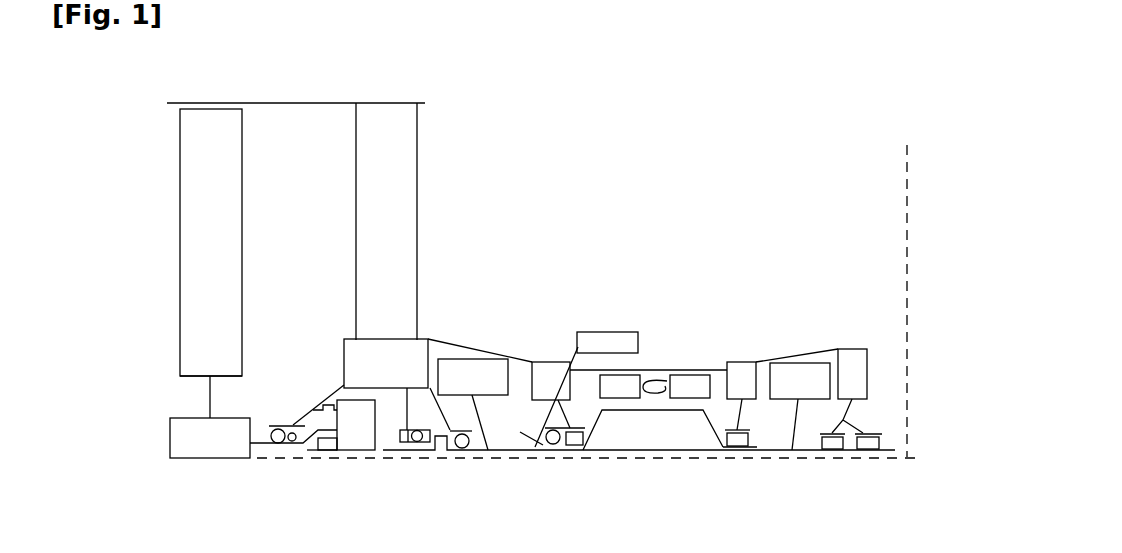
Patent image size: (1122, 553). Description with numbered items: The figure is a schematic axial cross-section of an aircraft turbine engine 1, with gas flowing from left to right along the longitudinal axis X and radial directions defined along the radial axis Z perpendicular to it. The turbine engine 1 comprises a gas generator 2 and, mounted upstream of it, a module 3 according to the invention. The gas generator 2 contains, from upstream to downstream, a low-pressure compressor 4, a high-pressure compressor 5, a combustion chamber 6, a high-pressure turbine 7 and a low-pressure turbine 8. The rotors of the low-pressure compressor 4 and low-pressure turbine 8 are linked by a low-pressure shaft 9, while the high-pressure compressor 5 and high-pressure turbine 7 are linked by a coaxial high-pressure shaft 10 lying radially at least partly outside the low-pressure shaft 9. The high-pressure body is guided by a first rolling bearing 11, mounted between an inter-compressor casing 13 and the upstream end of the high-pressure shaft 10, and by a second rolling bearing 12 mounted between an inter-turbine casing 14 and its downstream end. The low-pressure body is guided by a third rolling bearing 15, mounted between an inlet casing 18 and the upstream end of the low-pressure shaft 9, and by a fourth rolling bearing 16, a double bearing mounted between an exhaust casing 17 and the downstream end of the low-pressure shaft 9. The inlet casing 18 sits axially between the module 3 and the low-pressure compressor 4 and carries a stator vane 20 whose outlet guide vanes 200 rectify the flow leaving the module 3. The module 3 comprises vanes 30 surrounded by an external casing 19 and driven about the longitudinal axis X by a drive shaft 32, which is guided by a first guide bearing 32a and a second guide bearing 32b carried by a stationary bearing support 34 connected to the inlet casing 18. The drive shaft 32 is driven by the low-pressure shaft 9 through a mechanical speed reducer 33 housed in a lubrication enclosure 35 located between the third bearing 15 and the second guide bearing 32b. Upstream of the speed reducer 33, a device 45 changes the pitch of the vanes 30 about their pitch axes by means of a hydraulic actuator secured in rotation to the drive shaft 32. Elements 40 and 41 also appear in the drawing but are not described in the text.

The turbine engine 1 is at (612, 122).
The gas generator 2 is at (662, 294).
The module 3 is at (170, 343).
The low-pressure compressor 4 is at (488, 372).
The high-pressure compressor 5 is at (627, 380).
The combustion chamber 6 is at (657, 382).
The high-pressure turbine 7 is at (692, 382).
The low-pressure turbine 8 is at (783, 372).
The low-pressure shaft 9 is at (648, 452).
The high-pressure shaft 10 is at (588, 446).
The first rolling bearing 11 is at (555, 443).
The second rolling bearing 12 is at (738, 447).
The inter-compressor casing 13 is at (543, 370).
The inter-turbine casing 14 is at (740, 370).
The third rolling bearing 15 is at (460, 447).
The fourth rolling bearing 16 is at (867, 450).
The exhaust casing 17 is at (857, 362).
The inlet casing 18 is at (418, 352).
The external casing 19 is at (275, 100).
The stator vane 20 is at (421, 220).
The vanes 30 is at (162, 242).
The drive shaft 32 is at (279, 404).
The first guide bearing 32a is at (292, 425).
The second guide bearing 32b is at (277, 423).
The mechanical speed reducer 33 is at (368, 437).
The bearing support 34 is at (313, 408).
The lubrication enclosure 35 is at (437, 420).
The storage tower 40 is at (190, 272).
The support post 41 is at (210, 382).
The device for changing the pitch 45 is at (158, 446).
The vanes 200 is at (405, 257).
The radial axis Z is at (907, 183).
The longitudinal axis X is at (888, 460).